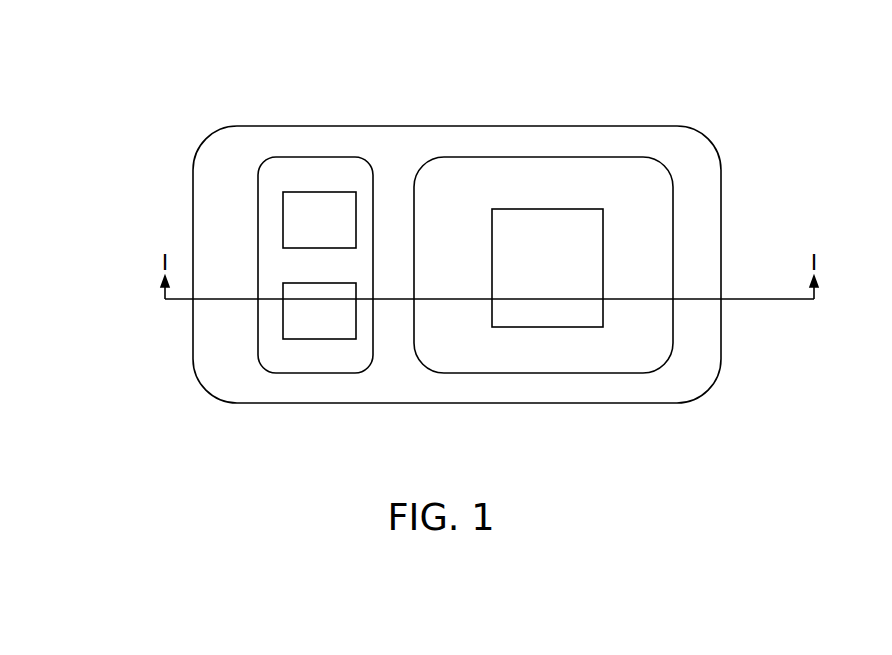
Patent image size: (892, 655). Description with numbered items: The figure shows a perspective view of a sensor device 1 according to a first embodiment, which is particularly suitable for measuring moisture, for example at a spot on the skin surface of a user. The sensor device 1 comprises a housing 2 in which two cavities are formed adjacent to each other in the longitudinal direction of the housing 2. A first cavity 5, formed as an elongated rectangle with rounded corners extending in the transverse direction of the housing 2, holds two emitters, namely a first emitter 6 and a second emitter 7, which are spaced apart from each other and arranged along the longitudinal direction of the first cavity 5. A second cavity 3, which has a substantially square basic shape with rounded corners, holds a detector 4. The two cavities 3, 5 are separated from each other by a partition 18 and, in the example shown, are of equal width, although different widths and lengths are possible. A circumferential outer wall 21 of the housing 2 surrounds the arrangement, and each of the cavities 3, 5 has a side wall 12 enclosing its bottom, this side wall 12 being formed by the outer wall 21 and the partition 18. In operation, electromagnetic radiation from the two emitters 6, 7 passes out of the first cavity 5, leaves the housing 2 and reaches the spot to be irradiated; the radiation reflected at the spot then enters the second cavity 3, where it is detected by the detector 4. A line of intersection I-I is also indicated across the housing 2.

The sensor device 1 is at (105, 137).
The housing 2 is at (697, 159).
The second cavity 3 is at (660, 339).
The detector 4 is at (568, 327).
The first cavity 5 is at (325, 360).
The first emitter 6 is at (285, 322).
The second emitter 7 is at (313, 192).
The side wall 12 is at (423, 82).
The partition 18 is at (390, 212).
The circumferential outer wall 21 is at (620, 137).